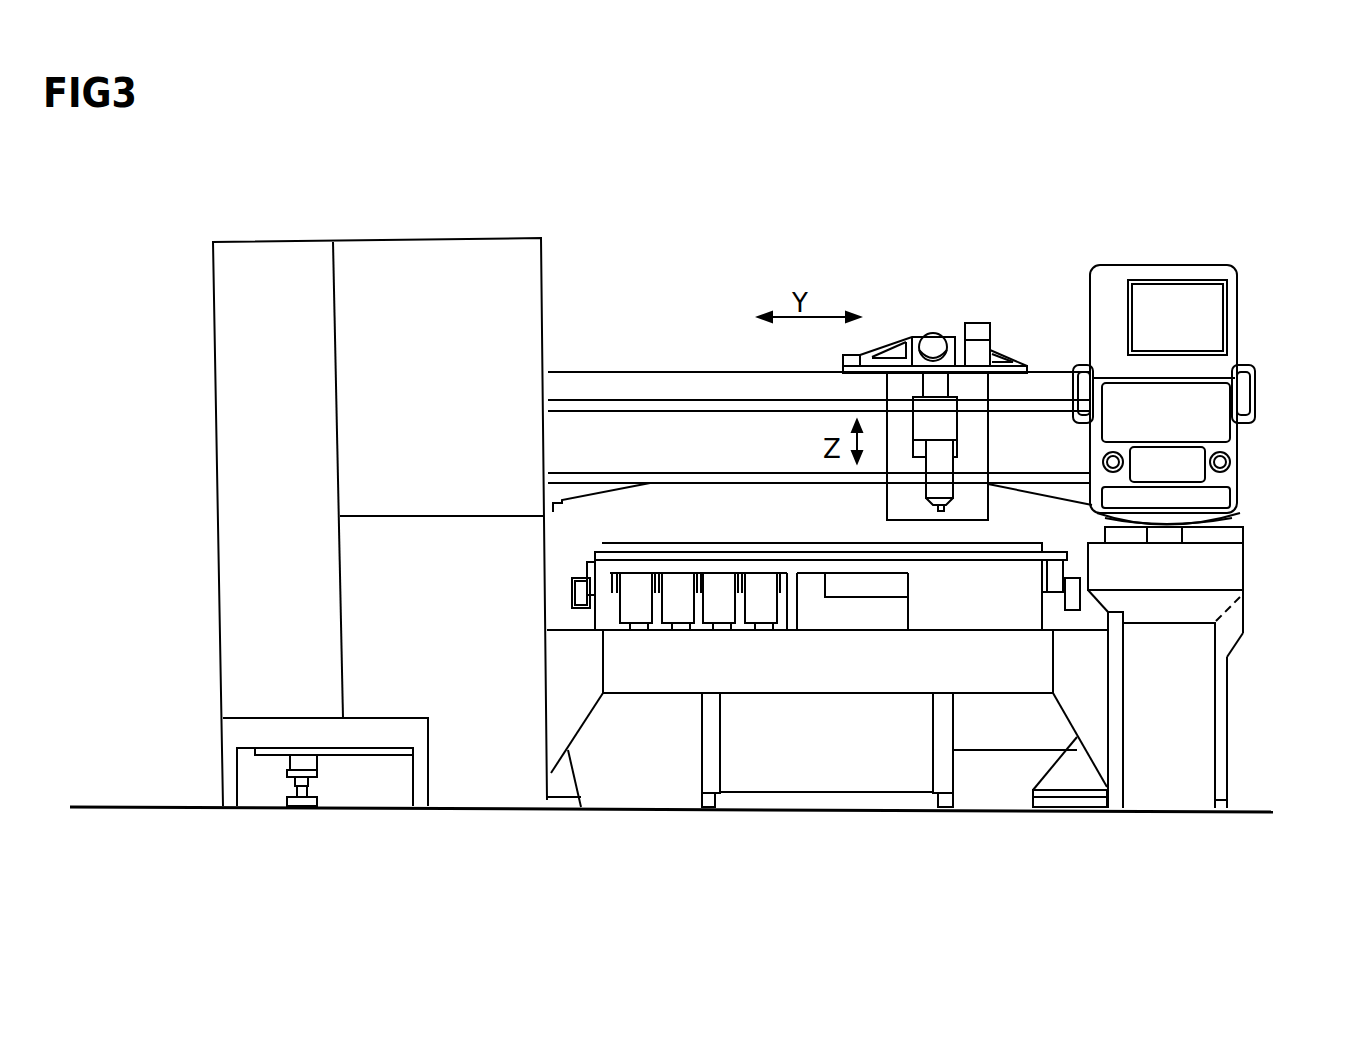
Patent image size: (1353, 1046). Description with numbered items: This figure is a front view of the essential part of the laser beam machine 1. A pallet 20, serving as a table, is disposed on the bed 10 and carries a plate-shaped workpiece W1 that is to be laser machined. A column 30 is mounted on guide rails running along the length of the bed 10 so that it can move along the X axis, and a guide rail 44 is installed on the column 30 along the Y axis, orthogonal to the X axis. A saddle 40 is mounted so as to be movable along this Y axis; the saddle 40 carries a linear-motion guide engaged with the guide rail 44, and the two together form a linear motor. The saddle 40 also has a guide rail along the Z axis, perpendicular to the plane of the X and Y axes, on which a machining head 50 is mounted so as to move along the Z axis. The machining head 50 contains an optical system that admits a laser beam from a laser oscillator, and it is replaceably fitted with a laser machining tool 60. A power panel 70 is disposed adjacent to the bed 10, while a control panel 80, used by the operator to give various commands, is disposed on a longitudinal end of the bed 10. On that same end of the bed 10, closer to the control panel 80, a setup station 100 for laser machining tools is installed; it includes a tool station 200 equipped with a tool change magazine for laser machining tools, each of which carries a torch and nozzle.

The laser beam machine 1 is at (890, 262).
The bed 10 is at (1220, 722).
The pallet 20 is at (1050, 587).
The column 30 is at (720, 393).
The saddle 40 is at (918, 340).
The guide rail 44 is at (627, 410).
The machining head 50 is at (938, 418).
The laser machining tool 60 is at (940, 472).
The power panel 70 is at (380, 522).
The control panel 80 is at (1223, 362).
The setup station 100 is at (972, 618).
The tool station 200 is at (664, 668).
The workpiece W1 is at (748, 540).